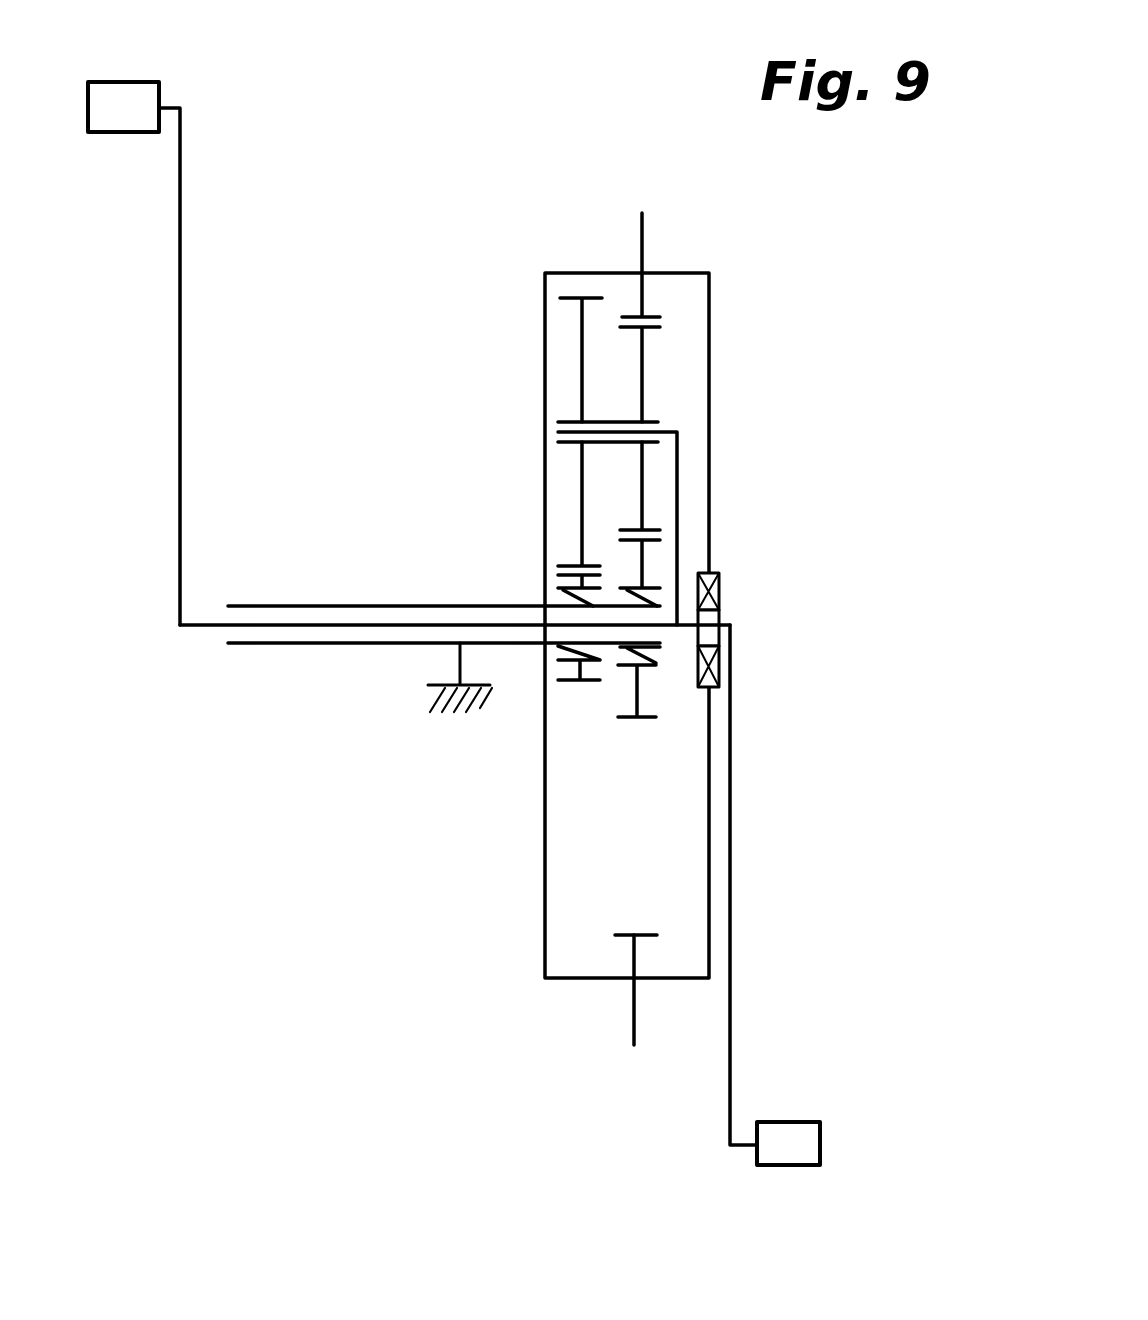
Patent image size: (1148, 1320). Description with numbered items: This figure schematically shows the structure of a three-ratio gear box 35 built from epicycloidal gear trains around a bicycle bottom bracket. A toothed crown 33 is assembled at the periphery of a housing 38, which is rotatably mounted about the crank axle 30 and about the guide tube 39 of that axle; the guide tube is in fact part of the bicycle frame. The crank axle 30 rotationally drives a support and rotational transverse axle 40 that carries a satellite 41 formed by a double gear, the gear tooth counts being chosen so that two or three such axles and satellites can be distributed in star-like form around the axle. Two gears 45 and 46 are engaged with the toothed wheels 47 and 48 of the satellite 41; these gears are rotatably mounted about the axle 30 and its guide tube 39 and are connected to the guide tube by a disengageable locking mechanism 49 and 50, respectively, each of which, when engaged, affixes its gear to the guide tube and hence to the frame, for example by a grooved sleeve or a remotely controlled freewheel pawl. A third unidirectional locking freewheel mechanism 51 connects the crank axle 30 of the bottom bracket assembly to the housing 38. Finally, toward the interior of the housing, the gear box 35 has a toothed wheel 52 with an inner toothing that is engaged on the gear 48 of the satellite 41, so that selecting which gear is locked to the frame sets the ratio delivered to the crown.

The crank axle 30 is at (193, 628).
The toothed crown 33 is at (633, 1022).
The gear box 35 is at (576, 594).
The housing 38 is at (685, 273).
The guide tube 39 is at (300, 644).
The transverse axle 40 is at (667, 432).
The satellite 41 is at (660, 348).
The gear 45 is at (567, 680).
The gear 46 is at (655, 718).
The toothed wheel 47 is at (582, 355).
The toothed wheel 48 is at (643, 388).
The disengageable locking mechanism 49 is at (560, 600).
The disengageable locking mechanism 50 is at (655, 600).
The unidirectional locking freewheel mechanism 51 is at (720, 607).
The toothed wheel 52 is at (640, 963).